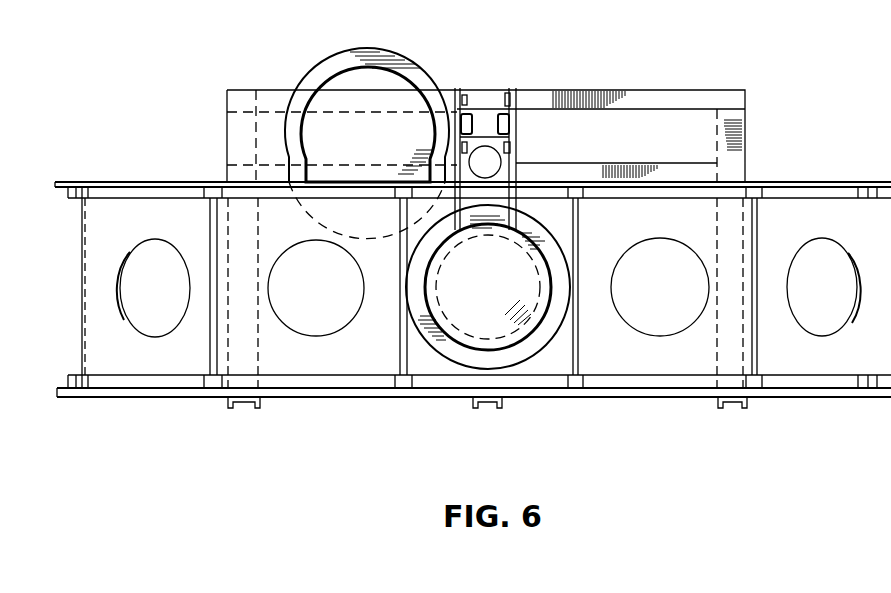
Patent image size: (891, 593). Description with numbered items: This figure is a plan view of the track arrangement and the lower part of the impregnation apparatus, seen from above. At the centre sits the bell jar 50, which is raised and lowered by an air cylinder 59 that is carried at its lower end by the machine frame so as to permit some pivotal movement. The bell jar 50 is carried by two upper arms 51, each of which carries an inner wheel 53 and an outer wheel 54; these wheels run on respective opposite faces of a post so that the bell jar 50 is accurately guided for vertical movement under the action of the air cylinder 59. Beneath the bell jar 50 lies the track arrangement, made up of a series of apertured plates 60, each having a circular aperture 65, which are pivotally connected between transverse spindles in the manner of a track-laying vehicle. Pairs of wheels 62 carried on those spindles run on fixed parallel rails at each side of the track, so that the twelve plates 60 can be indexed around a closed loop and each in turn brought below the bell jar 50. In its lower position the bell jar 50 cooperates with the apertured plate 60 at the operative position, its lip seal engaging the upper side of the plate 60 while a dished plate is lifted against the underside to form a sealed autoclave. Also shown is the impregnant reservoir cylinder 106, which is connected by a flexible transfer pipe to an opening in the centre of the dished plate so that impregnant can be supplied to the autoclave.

The bell jar 50 is at (547, 256).
The upper arms 51 is at (518, 98).
The inner wheel 53 is at (512, 140).
The outer wheel 54 is at (506, 95).
The air cylinder 59 is at (488, 165).
The apertured plate 60 is at (177, 362).
The wheels 62 is at (580, 385).
The circular aperture 65 is at (325, 332).
The impregnant reservoir cylinder 106 is at (320, 72).